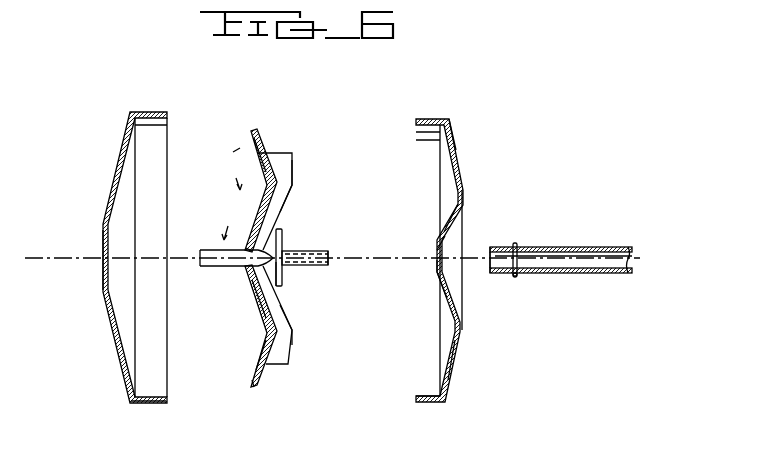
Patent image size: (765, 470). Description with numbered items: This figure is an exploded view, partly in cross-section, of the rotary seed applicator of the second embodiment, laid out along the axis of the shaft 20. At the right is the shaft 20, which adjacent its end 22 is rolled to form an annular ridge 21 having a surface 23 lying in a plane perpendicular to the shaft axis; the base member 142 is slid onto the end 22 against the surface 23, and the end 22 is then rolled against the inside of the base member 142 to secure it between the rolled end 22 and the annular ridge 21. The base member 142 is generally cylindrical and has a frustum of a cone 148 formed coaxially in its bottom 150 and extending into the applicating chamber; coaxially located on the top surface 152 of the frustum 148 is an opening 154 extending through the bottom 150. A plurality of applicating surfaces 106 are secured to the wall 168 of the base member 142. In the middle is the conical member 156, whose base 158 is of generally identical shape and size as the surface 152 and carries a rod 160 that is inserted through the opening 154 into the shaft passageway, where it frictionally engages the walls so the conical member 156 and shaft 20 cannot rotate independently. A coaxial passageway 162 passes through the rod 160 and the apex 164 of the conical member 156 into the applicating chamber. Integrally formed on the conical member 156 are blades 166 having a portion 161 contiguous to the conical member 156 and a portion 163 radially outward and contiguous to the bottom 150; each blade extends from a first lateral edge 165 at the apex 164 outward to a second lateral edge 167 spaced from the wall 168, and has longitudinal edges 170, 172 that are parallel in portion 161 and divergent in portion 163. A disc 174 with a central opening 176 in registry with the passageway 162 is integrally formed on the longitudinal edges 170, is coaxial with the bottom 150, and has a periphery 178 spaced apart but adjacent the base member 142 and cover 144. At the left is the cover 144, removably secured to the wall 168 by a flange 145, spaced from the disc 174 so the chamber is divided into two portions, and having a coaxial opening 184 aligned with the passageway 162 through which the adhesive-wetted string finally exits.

The shaft 20 is at (558, 248).
The annular ridge 21 is at (517, 277).
The end of shaft 22 is at (490, 270).
The surface of annular ridge 23 is at (513, 275).
The applicating surfaces 106 is at (426, 394).
The base member 142 is at (456, 134).
The cover 144 is at (120, 141).
The flange 145 is at (146, 405).
The frustum of a cone 148 is at (440, 226).
The bottom of base member 150 is at (463, 153).
The top surface of frustum 152 is at (436, 276).
The opening 154 is at (449, 250).
The conical member 156 is at (279, 263).
The base of conical member 158 is at (284, 236).
The rod 160 is at (329, 266).
The blade portion contiguous to conical member 161 is at (226, 223).
The coaxial passageway 162 is at (311, 251).
The blade portion radially outward 163 is at (233, 169).
The apex of conical member 164 is at (262, 258).
The first lateral edge 165 is at (222, 259).
The blades 166 is at (291, 160).
The second lateral edge 167 is at (272, 152).
The wall of base member 168 is at (449, 384).
The longitudinal edge 170 is at (254, 160).
The longitudinal edge 172 is at (294, 178).
The disc 174 is at (259, 370).
The central opening of disc 176 is at (249, 247).
The periphery of disc 178 is at (255, 386).
The coaxial opening of cover 184 is at (103, 262).